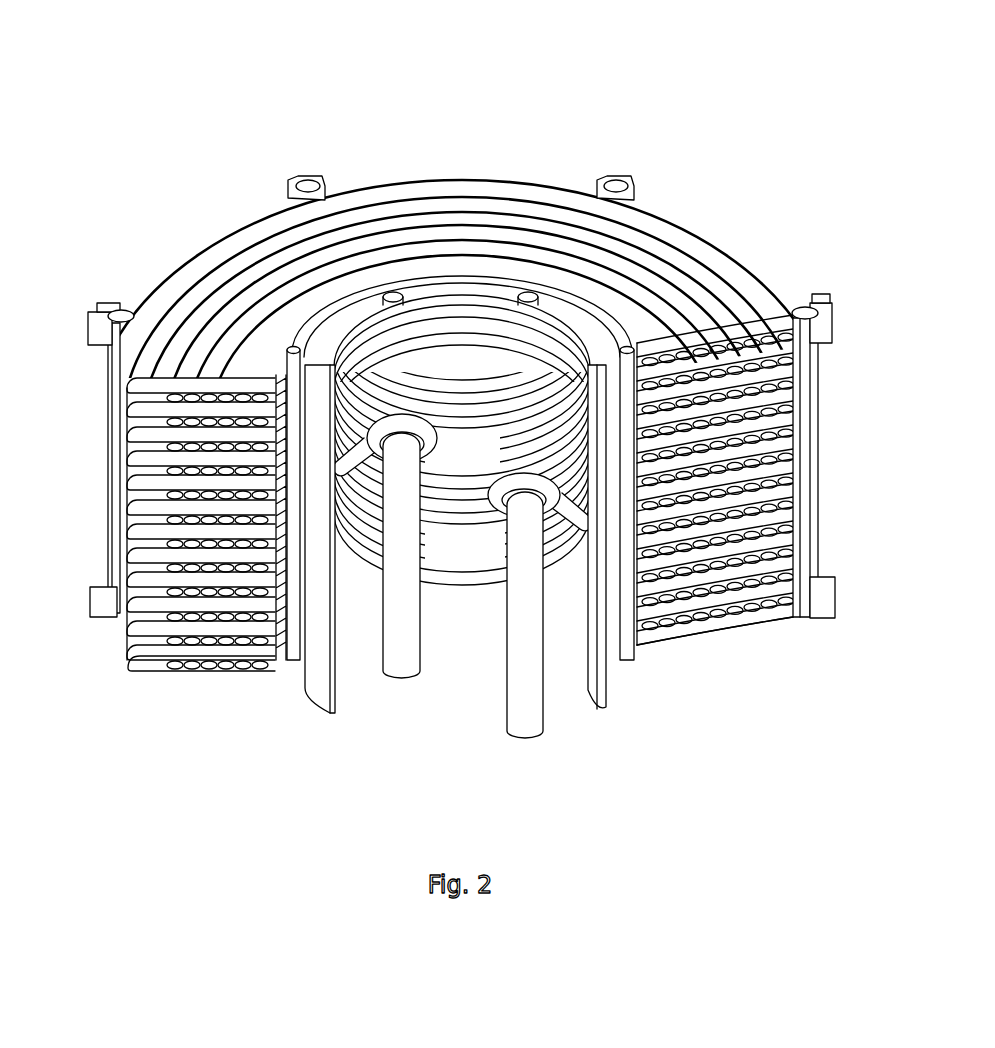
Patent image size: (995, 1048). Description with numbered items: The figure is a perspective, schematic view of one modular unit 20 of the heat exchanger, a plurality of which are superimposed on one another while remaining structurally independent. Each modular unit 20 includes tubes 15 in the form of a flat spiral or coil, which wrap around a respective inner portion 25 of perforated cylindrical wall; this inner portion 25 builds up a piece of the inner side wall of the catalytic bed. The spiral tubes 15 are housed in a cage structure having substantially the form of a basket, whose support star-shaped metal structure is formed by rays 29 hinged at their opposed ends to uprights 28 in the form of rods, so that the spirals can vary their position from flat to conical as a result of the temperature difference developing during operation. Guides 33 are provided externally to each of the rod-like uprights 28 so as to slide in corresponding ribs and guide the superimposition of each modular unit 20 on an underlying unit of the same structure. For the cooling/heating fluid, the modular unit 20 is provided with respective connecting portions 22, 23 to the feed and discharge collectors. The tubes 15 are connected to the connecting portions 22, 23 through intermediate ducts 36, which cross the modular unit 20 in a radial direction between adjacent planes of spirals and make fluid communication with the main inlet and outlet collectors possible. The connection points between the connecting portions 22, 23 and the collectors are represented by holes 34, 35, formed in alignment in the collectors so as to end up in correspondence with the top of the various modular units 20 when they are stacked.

The modular unit 20 is at (412, 142).
The tube 15 is at (716, 245).
The connecting portion 22 is at (420, 641).
The connecting portion 23 is at (513, 704).
The inner portion of perforated cylindrical wall 25 is at (612, 676).
The upright 28 is at (603, 182).
The ray 29 is at (695, 632).
The guide 33 is at (832, 343).
The hole 34 is at (430, 442).
The hole 35 is at (498, 513).
The intermediate duct 36 is at (125, 492).